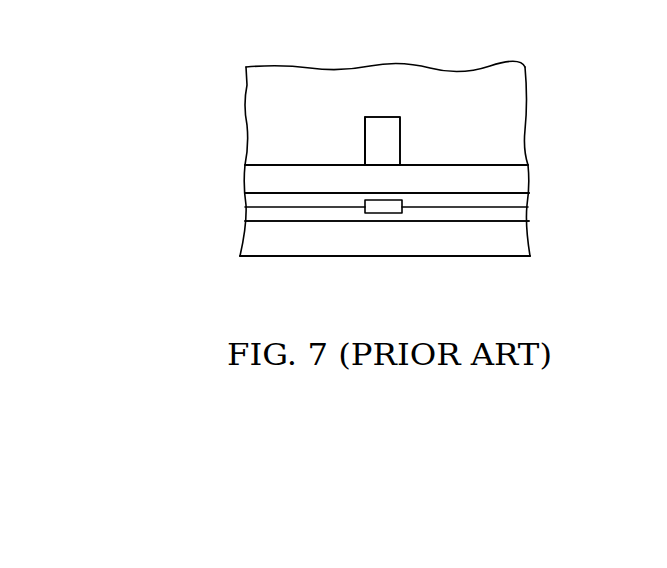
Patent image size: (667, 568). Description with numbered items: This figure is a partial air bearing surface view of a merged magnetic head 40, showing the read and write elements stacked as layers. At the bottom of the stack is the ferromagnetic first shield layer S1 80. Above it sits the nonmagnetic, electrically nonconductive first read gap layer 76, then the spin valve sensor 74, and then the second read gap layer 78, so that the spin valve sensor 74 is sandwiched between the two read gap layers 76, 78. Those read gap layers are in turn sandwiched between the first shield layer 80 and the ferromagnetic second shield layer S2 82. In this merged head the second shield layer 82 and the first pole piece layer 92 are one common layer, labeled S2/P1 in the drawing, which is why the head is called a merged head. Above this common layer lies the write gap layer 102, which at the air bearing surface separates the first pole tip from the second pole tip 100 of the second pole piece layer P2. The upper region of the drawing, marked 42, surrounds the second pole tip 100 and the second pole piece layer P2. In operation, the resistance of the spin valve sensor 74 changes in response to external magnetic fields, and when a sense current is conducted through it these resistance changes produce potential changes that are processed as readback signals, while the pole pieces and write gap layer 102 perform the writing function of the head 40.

The merged magnetic head 40 is at (575, 69).
The dielectric layer 42 is at (258, 91).
The spin valve sensor 74 is at (385, 213).
The first read gap layer 76 is at (282, 221).
The second read gap layer 78 is at (493, 200).
The first shield layer 80 is at (518, 237).
The second shield layer 82 is at (258, 177).
The first pole piece layer 92 is at (387, 179).
The second pole tip 100 is at (393, 124).
The write gap layer 102 is at (377, 163).
The second pole piece layer P2 is at (388, 139).
The first shield layer S1 is at (385, 241).
The second shield layer S2 is at (386, 179).